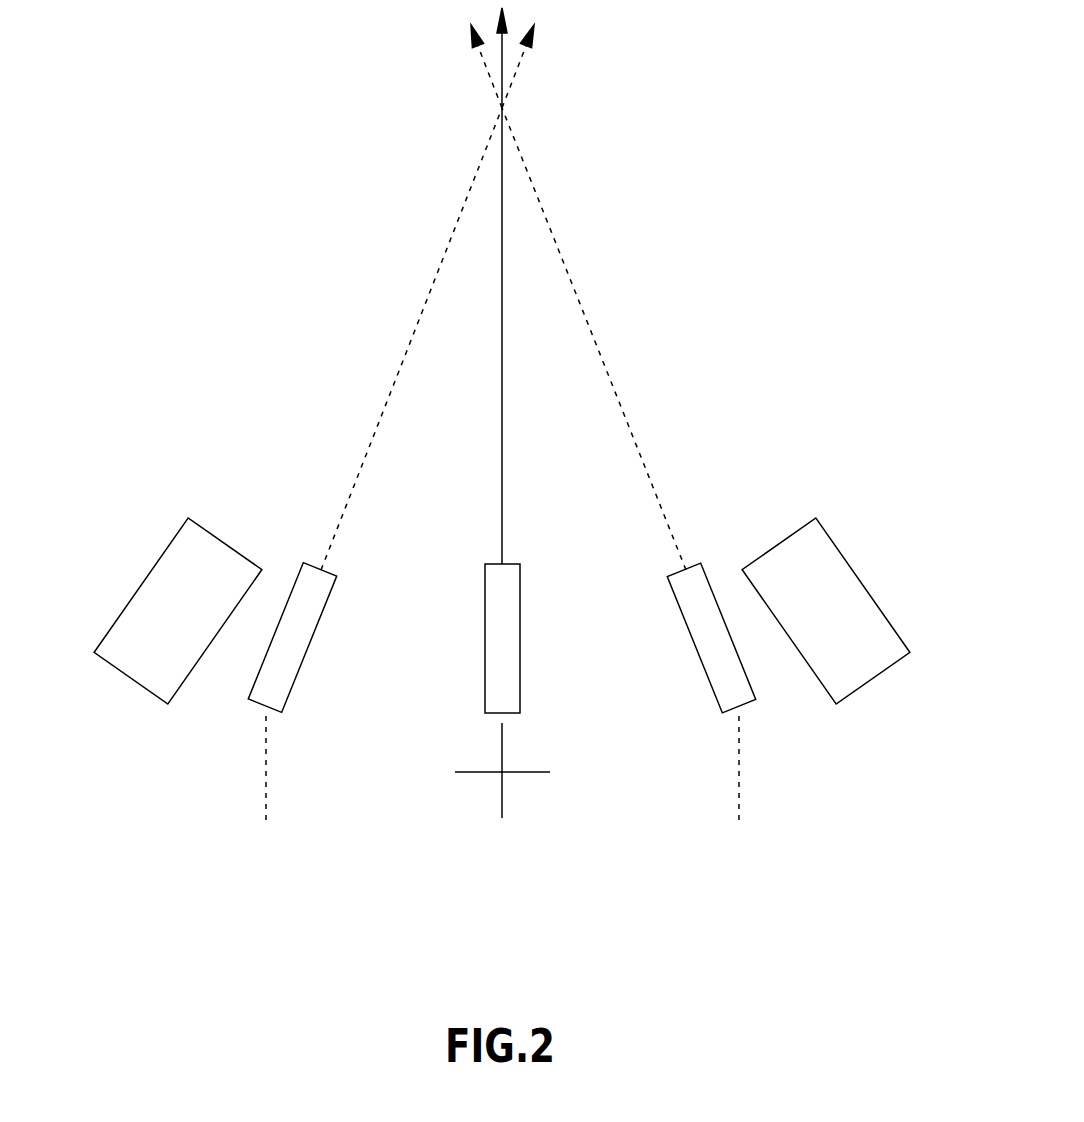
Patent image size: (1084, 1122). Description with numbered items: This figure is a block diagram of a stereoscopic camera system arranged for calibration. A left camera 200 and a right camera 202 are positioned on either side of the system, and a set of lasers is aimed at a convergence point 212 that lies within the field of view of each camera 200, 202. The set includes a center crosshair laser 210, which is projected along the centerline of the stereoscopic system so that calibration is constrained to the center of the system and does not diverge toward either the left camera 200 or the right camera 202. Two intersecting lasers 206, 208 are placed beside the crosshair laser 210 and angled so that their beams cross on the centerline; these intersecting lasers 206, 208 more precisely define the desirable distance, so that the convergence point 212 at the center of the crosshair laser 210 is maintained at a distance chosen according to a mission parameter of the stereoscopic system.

The left camera 200 is at (130, 680).
The right camera 202 is at (877, 680).
The intersecting laser 206 is at (263, 708).
The intersecting laser 208 is at (740, 708).
The crosshair laser 210 is at (520, 647).
The convergence point 212 is at (505, 110).